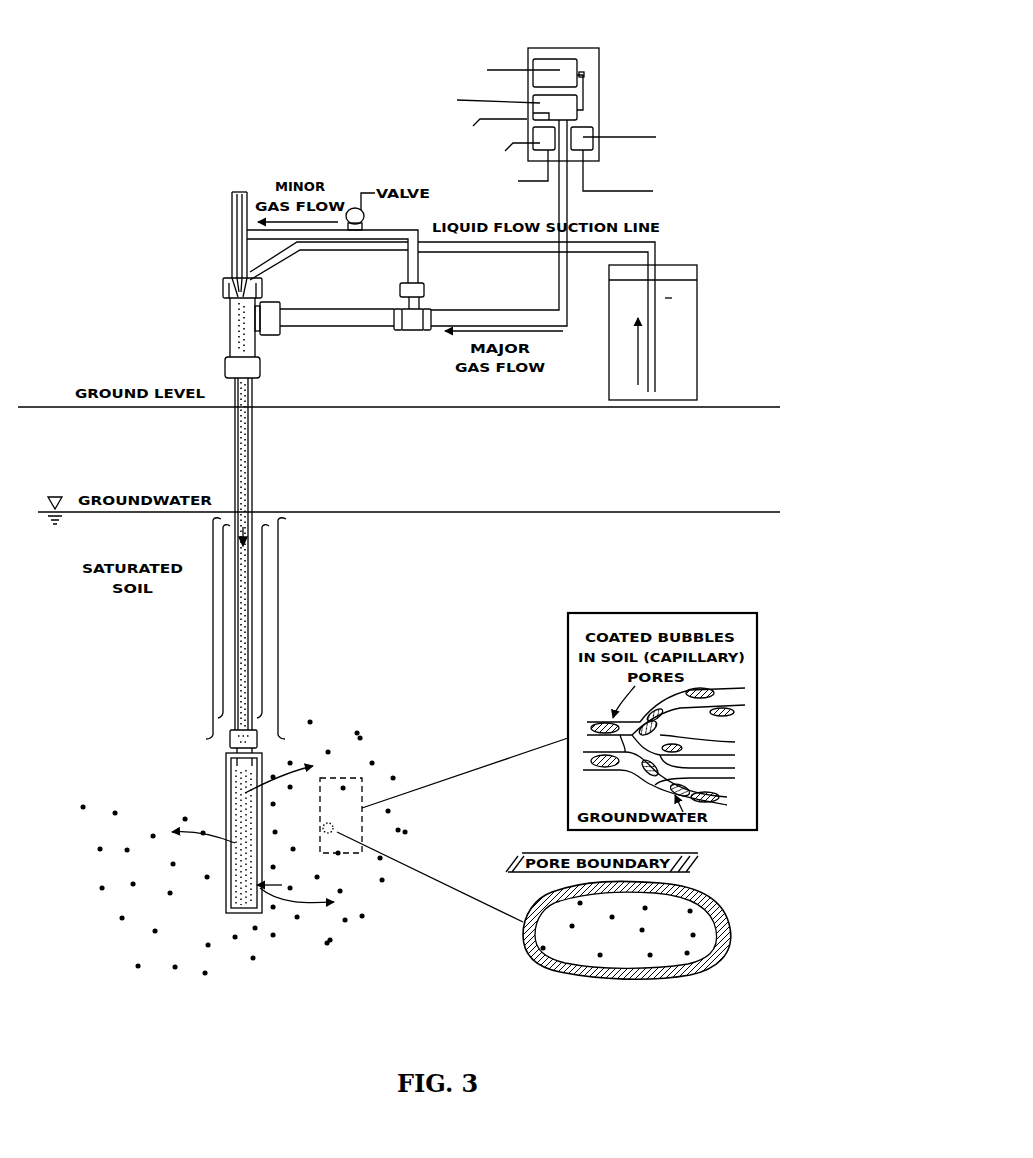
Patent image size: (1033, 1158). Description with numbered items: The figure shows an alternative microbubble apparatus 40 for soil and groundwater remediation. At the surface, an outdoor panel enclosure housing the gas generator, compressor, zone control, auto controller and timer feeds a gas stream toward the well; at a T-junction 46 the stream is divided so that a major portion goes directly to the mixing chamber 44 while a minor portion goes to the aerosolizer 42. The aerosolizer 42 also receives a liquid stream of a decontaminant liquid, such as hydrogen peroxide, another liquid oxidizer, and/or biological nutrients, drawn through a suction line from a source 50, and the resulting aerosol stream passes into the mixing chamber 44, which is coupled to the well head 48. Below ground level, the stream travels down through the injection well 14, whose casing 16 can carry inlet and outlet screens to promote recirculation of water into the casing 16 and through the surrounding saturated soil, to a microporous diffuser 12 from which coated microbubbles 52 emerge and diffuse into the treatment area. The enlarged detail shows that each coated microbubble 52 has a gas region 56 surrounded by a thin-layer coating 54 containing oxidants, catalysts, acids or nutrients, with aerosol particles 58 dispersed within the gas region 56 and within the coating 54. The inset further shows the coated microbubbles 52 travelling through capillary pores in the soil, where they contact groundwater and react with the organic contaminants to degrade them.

The microbubble apparatus 40 is at (233, 75).
The aerosolizer 42 is at (232, 236).
The mixing chamber 44 is at (230, 331).
The T-junction 46 is at (413, 331).
The well head 48 is at (262, 373).
The source 50 is at (699, 298).
The microporous diffuser 12 is at (137, 1025).
The injection well 14 is at (263, 548).
The casing 16 is at (278, 623).
The coated microbubble 52 is at (647, 1047).
The thin-layer coating 54 is at (718, 963).
The gas region 56 is at (710, 930).
The aerosol particles 58 is at (599, 957).